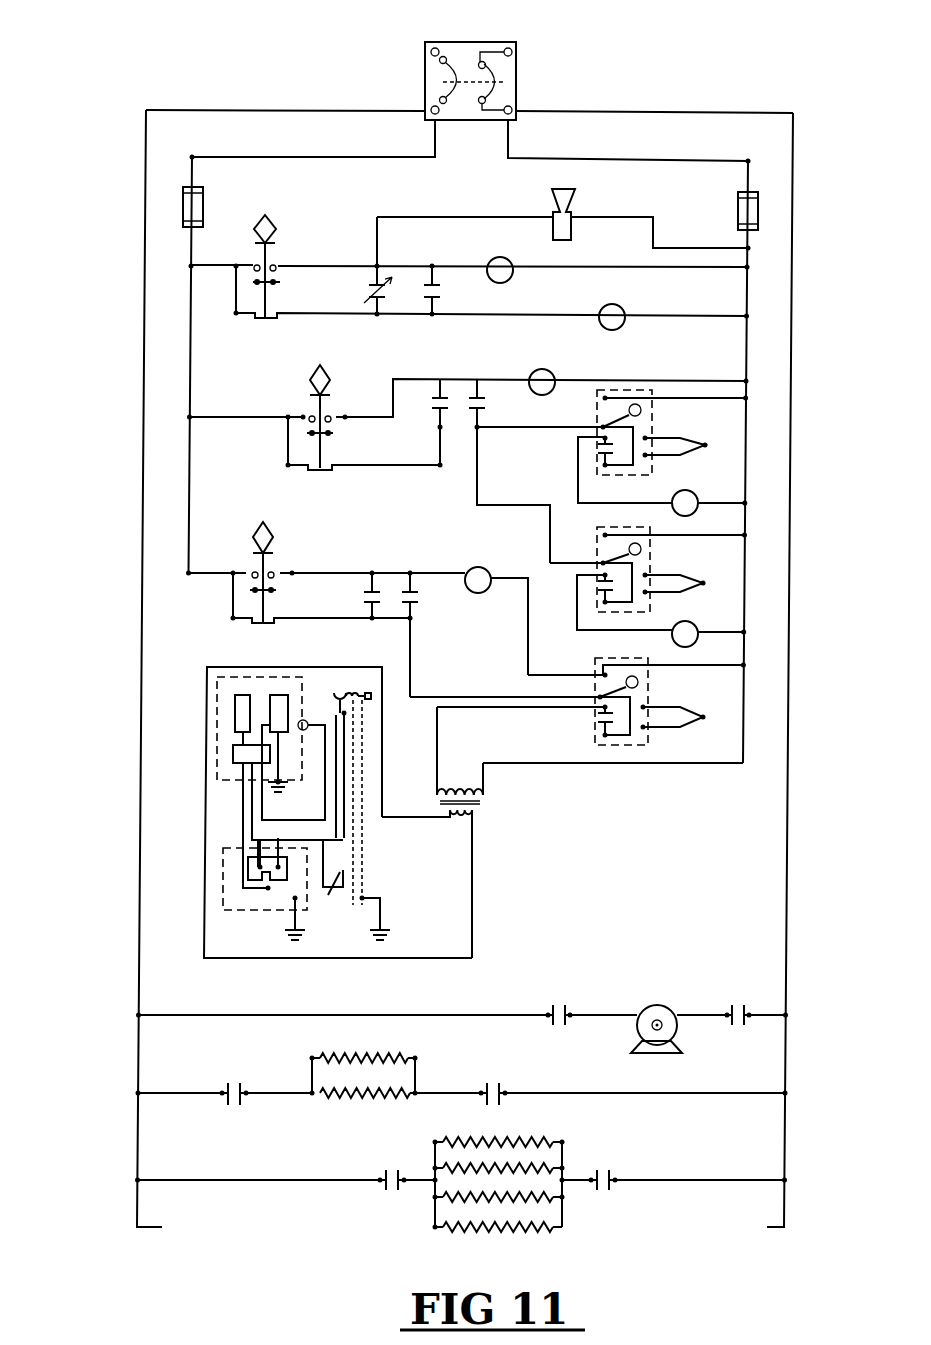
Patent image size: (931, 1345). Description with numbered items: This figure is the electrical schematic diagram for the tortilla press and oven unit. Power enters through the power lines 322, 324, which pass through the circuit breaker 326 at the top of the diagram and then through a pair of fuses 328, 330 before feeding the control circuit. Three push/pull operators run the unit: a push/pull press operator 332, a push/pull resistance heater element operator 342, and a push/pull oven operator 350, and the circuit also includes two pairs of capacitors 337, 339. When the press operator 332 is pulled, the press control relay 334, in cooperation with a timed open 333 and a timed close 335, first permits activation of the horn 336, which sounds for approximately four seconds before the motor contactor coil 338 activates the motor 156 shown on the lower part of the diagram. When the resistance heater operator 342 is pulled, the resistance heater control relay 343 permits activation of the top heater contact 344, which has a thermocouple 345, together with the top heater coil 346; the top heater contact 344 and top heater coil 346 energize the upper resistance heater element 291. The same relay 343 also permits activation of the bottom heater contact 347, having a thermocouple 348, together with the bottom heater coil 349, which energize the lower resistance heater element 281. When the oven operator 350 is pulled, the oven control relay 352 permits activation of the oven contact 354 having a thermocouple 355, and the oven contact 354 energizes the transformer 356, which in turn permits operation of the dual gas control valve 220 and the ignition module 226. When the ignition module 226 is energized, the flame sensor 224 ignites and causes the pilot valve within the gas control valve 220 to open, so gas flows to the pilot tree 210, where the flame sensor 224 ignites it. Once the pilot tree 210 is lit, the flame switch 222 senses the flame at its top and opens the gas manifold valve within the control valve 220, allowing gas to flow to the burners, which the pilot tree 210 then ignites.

The power line 322 is at (435, 42).
The power line 324 is at (508, 42).
The circuit breaker 326 is at (516, 68).
The fuse 328 is at (203, 200).
The fuse 330 is at (738, 205).
The push/pull press operator 332 is at (276, 229).
The timed open 333 is at (392, 282).
The press control relay 334 is at (513, 275).
The timed close 335 is at (428, 306).
The horn 336 is at (551, 200).
The pair of capacitors 337 is at (468, 402).
The motor contactor coil 338 is at (625, 322).
The pair of capacitors 339 is at (378, 590).
The push/pull resistance heater element operator 342 is at (313, 369).
The resistance heater control relay 343 is at (545, 358).
The top heater contact 344 is at (652, 420).
The thermocouple 345 is at (705, 445).
The top heater coil 346 is at (672, 512).
The bottom heater contact 347 is at (650, 553).
The thermocouple 348 is at (703, 583).
The bottom heater coil 349 is at (672, 640).
The push/pull oven operator 350 is at (285, 517).
The oven control relay 352 is at (484, 558).
The oven contact 354 is at (648, 690).
The thermocouple 355 is at (703, 717).
The transformer 356 is at (483, 797).
The pilot tree 210 is at (362, 841).
The dual gas control valve 220 is at (223, 878).
The flame switch 222 is at (334, 700).
The flame sensor 224 is at (330, 896).
The ignition module 226 is at (217, 710).
The motor 156 is at (658, 1005).
The upper resistance heater element 291 is at (417, 1075).
The lower resistance heater element 281 is at (562, 1153).